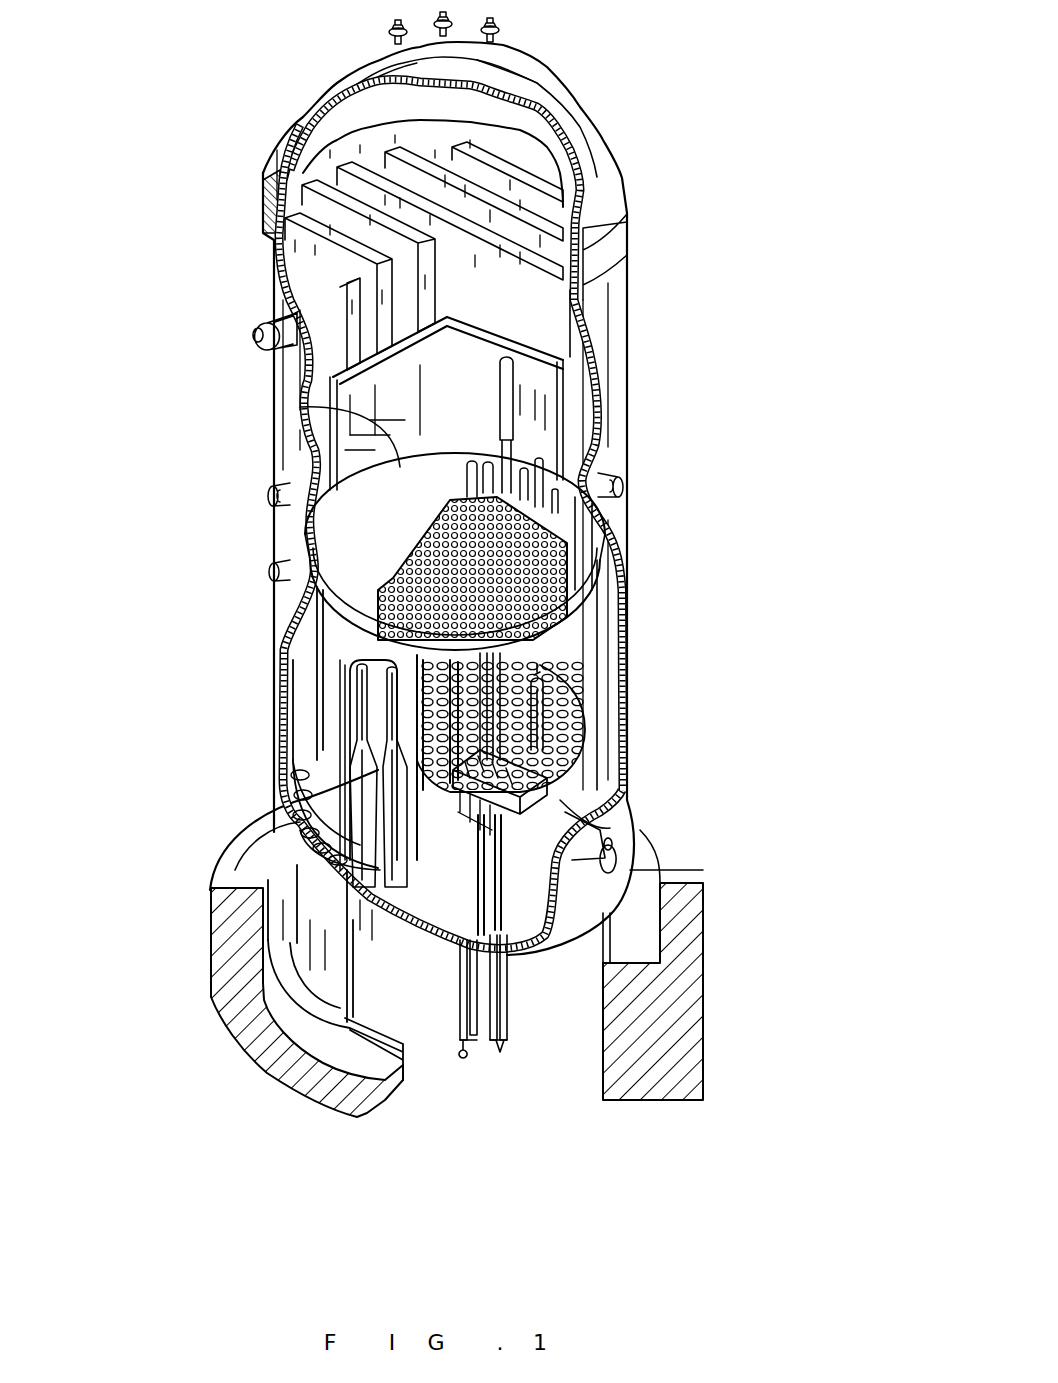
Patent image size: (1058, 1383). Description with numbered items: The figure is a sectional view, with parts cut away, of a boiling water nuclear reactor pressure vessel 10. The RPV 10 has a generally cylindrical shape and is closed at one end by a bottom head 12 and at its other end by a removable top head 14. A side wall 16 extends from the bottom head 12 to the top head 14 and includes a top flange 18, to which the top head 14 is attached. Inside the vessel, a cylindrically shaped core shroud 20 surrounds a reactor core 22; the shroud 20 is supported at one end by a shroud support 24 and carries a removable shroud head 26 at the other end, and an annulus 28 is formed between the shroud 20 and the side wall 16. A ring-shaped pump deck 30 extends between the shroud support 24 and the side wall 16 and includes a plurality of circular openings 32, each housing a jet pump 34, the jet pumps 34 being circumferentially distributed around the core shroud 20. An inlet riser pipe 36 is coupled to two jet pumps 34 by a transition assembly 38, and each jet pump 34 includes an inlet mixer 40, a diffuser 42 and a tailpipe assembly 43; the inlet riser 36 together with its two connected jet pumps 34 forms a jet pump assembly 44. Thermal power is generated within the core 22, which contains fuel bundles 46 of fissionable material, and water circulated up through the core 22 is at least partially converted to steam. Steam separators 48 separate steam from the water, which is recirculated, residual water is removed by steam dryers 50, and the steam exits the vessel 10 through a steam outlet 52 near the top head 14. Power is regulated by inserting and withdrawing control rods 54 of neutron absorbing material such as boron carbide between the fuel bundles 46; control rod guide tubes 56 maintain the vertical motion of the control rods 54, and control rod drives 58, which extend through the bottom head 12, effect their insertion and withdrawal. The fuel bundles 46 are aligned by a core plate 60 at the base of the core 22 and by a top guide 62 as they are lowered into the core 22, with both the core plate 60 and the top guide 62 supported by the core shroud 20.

The reactor pressure vessel 10 is at (668, 82).
The bottom head 12 is at (547, 947).
The top head 14 is at (543, 68).
The side wall 16 is at (277, 777).
The top flange 18 is at (585, 268).
The core shroud 20 is at (353, 637).
The reactor core 22 is at (560, 630).
The shroud support 24 is at (307, 793).
The shroud head 26 is at (330, 407).
The annulus 28 is at (277, 698).
The pump deck 30 is at (307, 807).
The circular openings 32 is at (307, 847).
The jet pump 34 is at (352, 722).
The inlet riser pipe 36 is at (380, 753).
The transition assembly 38 is at (350, 656).
The inlet mixer 40 is at (353, 693).
The diffuser 42 is at (357, 857).
The tailpipe assembly 43 is at (355, 860).
The jet pump assembly 44 is at (443, 830).
The fuel bundles 46 is at (577, 677).
The steam separators 48 is at (515, 362).
The steam dryers 50 is at (450, 284).
The steam outlet 52 is at (245, 337).
The control rods 54 is at (560, 670).
The control rod guide tubes 56 is at (560, 803).
The control rod drives 58 is at (507, 1017).
The core plate 60 is at (590, 717).
The top guide 62 is at (580, 603).